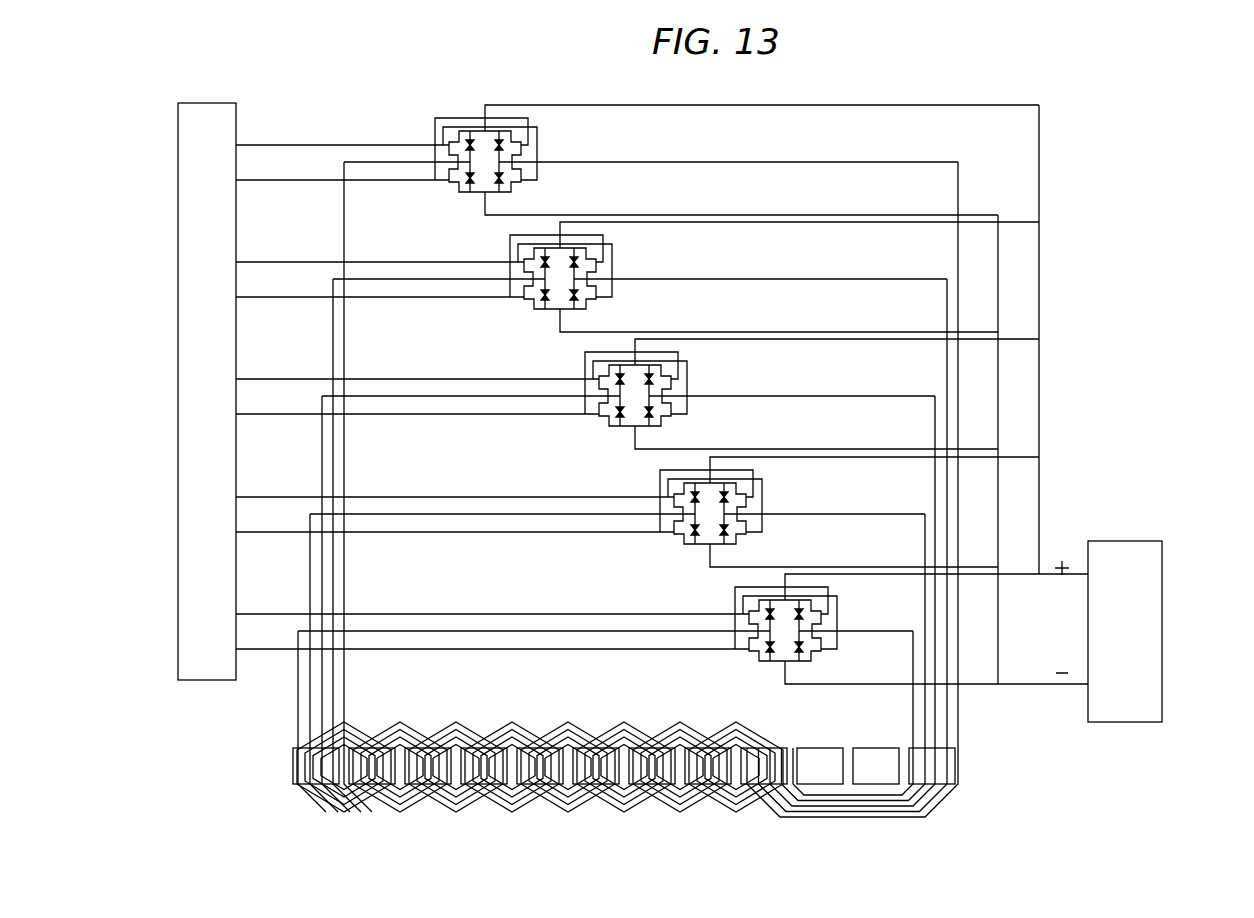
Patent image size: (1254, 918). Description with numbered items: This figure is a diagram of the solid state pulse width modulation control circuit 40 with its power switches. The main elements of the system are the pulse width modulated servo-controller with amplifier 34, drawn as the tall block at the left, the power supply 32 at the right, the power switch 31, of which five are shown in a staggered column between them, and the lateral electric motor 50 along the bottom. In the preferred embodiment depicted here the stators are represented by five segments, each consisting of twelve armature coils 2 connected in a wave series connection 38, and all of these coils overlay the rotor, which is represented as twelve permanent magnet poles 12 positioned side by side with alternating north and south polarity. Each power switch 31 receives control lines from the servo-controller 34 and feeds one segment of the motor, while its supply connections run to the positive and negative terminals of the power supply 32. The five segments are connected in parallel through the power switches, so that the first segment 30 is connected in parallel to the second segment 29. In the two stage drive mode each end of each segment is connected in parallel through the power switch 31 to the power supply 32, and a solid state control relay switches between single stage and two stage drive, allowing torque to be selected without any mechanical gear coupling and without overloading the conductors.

The armature coils 2 is at (648, 757).
The permanent magnet poles 12 is at (828, 745).
The second segment 29 is at (582, 518).
The first segment 30 is at (649, 636).
The power switch 31 is at (470, 128).
The power supply 32 is at (1143, 612).
The pulse width modulated servo-controller with amplifier 34 is at (190, 254).
The wave series connection 38 is at (465, 816).
The pulse width modulation control circuit 40 is at (1111, 189).
The lateral electric motor 50 is at (621, 818).